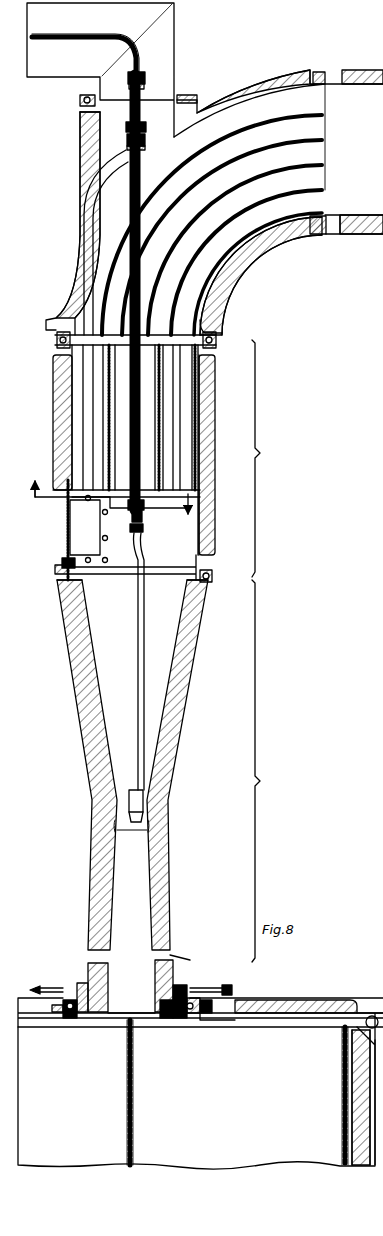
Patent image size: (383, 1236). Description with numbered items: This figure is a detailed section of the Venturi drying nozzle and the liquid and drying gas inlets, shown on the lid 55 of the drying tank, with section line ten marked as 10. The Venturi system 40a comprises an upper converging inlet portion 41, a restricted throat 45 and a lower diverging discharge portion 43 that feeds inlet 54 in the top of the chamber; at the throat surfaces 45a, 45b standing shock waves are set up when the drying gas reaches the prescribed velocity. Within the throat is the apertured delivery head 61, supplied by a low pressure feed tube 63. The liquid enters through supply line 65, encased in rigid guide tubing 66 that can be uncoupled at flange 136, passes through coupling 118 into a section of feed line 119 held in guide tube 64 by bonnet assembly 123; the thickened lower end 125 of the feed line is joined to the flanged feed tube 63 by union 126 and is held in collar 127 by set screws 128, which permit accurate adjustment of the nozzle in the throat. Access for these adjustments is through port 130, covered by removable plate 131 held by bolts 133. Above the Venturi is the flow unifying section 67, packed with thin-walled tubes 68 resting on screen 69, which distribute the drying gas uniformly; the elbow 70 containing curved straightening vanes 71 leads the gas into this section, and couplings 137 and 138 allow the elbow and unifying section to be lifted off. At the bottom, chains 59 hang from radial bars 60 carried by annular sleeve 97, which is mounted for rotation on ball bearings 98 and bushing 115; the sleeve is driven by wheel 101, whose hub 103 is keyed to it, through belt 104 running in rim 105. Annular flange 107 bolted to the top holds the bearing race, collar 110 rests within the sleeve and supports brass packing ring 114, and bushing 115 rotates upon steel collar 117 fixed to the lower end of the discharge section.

The section line 10- 10 is at (108, 508).
The Venturi system 40a is at (270, 771).
The upper converging inlet portion 41 is at (84, 640).
The lower diverging discharge portion 43 is at (108, 965).
The throat 45 is at (127, 836).
The throat surface 45a is at (149, 824).
The throat surface 45b is at (115, 824).
The inlet 54 is at (120, 1013).
The drying chamber top 55 is at (196, 1098).
The chains 59 is at (136, 1122).
The radial bars 60 is at (38, 1027).
The apertured head or delivery means 61 is at (130, 790).
The low pressure feed tube 63 is at (142, 640).
The guide tube 64 is at (143, 268).
The supply line 65 is at (86, 34).
The rigid guide tubing 66 is at (30, 77).
The flow unifying section 67 is at (167, 458).
The thin-walled tubes 68 is at (97, 335).
The screen 69 is at (210, 480).
The elbow 70 is at (312, 78).
The straightening vanes 71 is at (325, 140).
The annular sleeve 97 is at (176, 1022).
The ball bearings 98 is at (74, 1020).
The wheel 101 is at (206, 984).
The hub 103 is at (181, 985).
The belt 104 is at (36, 986).
The rim 105 is at (228, 984).
The annular flange 107 is at (200, 1022).
The collar 110 is at (173, 987).
The brass packing ring 114 is at (160, 1004).
The bushing 115 is at (183, 947).
The steel collar 117 is at (155, 970).
The coupling 118 is at (145, 72).
The feed line 119 is at (150, 192).
The bonnet assembly 123 is at (142, 120).
The thickened end 125 is at (143, 516).
The union 126 is at (143, 530).
The collar 127 is at (144, 497).
The set screws 128 is at (125, 508).
The port 130 is at (70, 548).
The removable plate 131 is at (80, 532).
The bolts 133 is at (62, 562).
The flange 136 is at (80, 100).
The coupling 137 is at (330, 68).
The coupling 138 is at (55, 570).